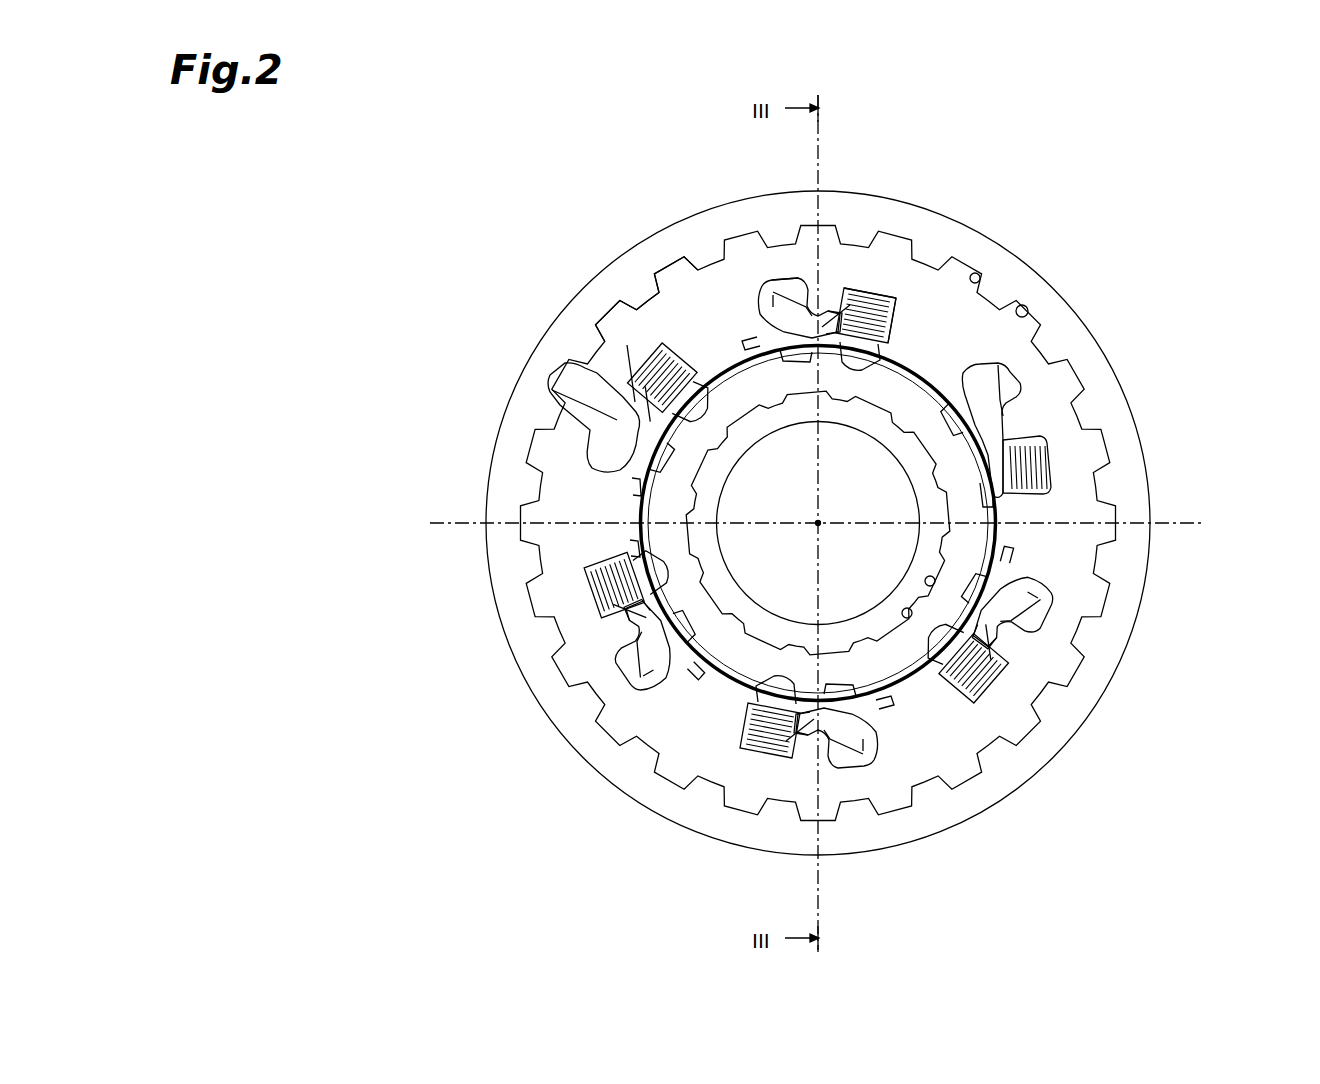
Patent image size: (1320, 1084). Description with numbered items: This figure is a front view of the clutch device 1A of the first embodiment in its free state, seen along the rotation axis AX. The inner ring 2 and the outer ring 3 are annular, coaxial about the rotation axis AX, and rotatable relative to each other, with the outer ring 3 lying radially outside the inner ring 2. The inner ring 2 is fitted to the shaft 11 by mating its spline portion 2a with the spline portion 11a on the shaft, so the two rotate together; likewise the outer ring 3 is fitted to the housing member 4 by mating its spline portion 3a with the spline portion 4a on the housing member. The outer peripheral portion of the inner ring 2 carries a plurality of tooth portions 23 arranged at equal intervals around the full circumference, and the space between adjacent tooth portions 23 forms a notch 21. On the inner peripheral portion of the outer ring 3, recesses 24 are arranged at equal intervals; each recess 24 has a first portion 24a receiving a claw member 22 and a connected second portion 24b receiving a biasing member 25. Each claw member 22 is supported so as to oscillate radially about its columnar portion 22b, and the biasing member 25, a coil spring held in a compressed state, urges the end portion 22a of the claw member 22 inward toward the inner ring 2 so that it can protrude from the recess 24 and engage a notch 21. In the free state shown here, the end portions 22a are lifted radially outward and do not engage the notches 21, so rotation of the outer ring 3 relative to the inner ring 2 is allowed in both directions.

The clutch device 1A is at (1172, 193).
The inner ring 2 is at (890, 652).
The spline portion 2a is at (911, 616).
The outer ring 3 is at (715, 295).
The spline portion 3a is at (663, 257).
The housing member 4 is at (1057, 313).
The spline portion 4a is at (1024, 305).
The shaft 11 is at (770, 586).
The spline portion 11a is at (853, 656).
The notch 21 is at (635, 548).
The claw member 22 is at (773, 294).
The end portion 22a is at (890, 343).
The columnar portion 22b is at (884, 343).
The tooth portion 23 is at (673, 660).
The recess 24 is at (936, 138).
The first portion 24a is at (820, 293).
The second portion 24b is at (867, 297).
The biasing member 25 is at (900, 322).
The rotation axis AX is at (822, 527).